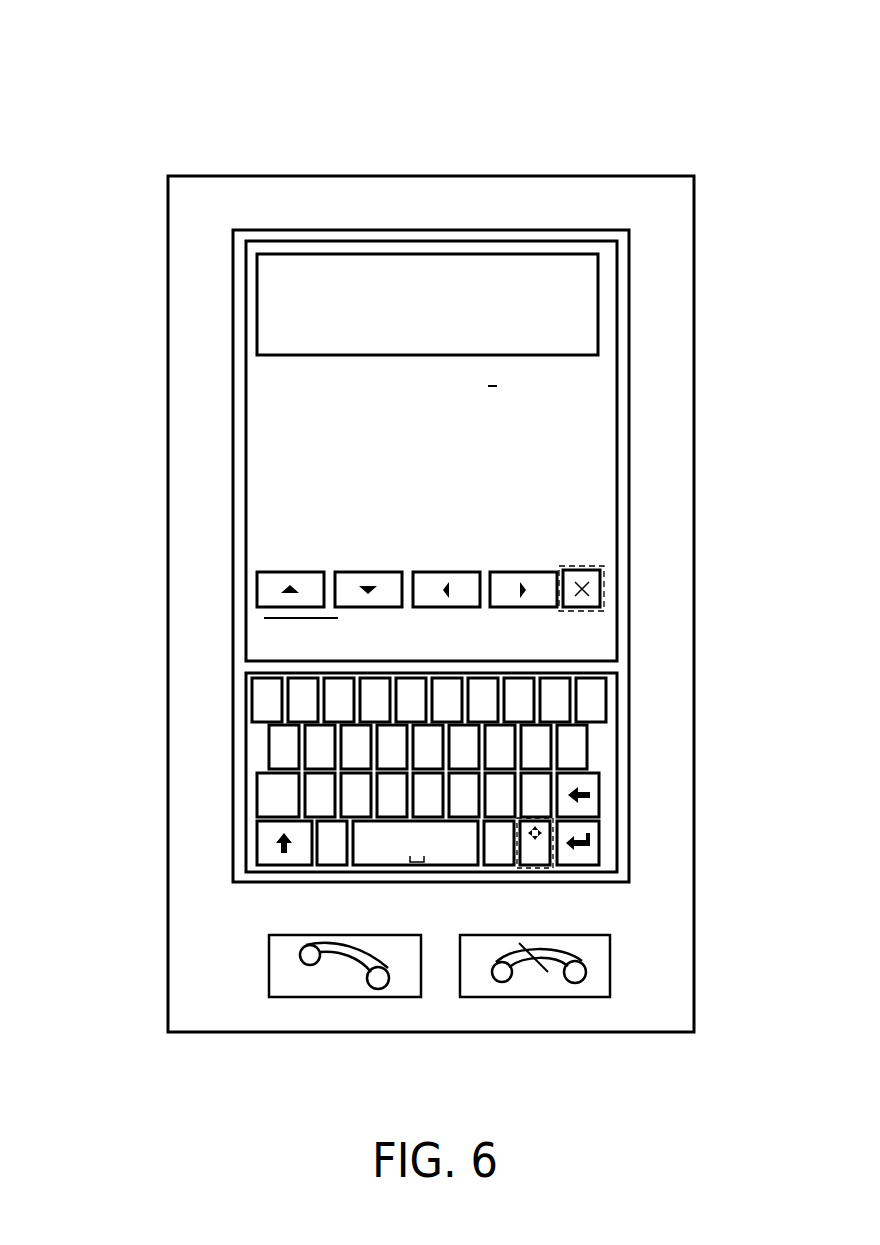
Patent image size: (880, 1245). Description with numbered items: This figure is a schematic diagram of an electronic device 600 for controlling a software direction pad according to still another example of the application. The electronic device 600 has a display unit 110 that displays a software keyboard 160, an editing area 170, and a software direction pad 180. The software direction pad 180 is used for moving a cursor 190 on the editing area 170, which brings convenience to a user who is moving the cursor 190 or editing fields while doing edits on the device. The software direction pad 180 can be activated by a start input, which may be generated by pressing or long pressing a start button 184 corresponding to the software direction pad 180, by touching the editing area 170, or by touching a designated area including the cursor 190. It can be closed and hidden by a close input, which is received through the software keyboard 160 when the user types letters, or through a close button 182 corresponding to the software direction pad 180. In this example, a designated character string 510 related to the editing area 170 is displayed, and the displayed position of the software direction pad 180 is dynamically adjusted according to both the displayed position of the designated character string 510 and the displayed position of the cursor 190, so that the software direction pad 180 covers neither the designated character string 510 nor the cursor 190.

The electronic device 600 is at (696, 100).
The display unit 110 is at (630, 540).
The editing area 170 is at (262, 541).
The designated character string 510 is at (250, 282).
The cursor 190 is at (512, 382).
The software direction pad 180 is at (256, 588).
The close button 182 is at (604, 587).
The software keyboard 160 is at (255, 742).
The start button 184 is at (538, 866).